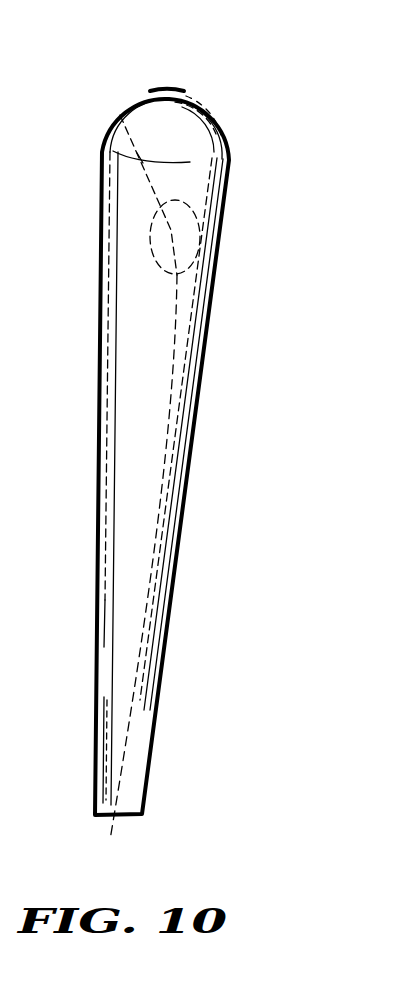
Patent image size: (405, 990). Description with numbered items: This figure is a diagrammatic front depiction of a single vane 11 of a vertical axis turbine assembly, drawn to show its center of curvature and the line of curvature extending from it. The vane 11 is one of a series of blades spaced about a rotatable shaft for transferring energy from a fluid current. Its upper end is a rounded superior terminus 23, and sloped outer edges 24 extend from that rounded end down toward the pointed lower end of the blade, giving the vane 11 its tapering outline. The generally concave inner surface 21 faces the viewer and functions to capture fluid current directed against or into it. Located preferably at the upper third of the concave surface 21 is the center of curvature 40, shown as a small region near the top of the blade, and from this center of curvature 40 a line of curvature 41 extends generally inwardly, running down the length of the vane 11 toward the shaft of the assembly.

The vane 11 is at (215, 110).
The rounded superior terminus 23 is at (177, 88).
The concave inner surface 21 is at (147, 335).
The sloped outer edges 24 is at (207, 335).
The center of curvature 40 is at (152, 238).
The line of curvature 41 is at (148, 557).